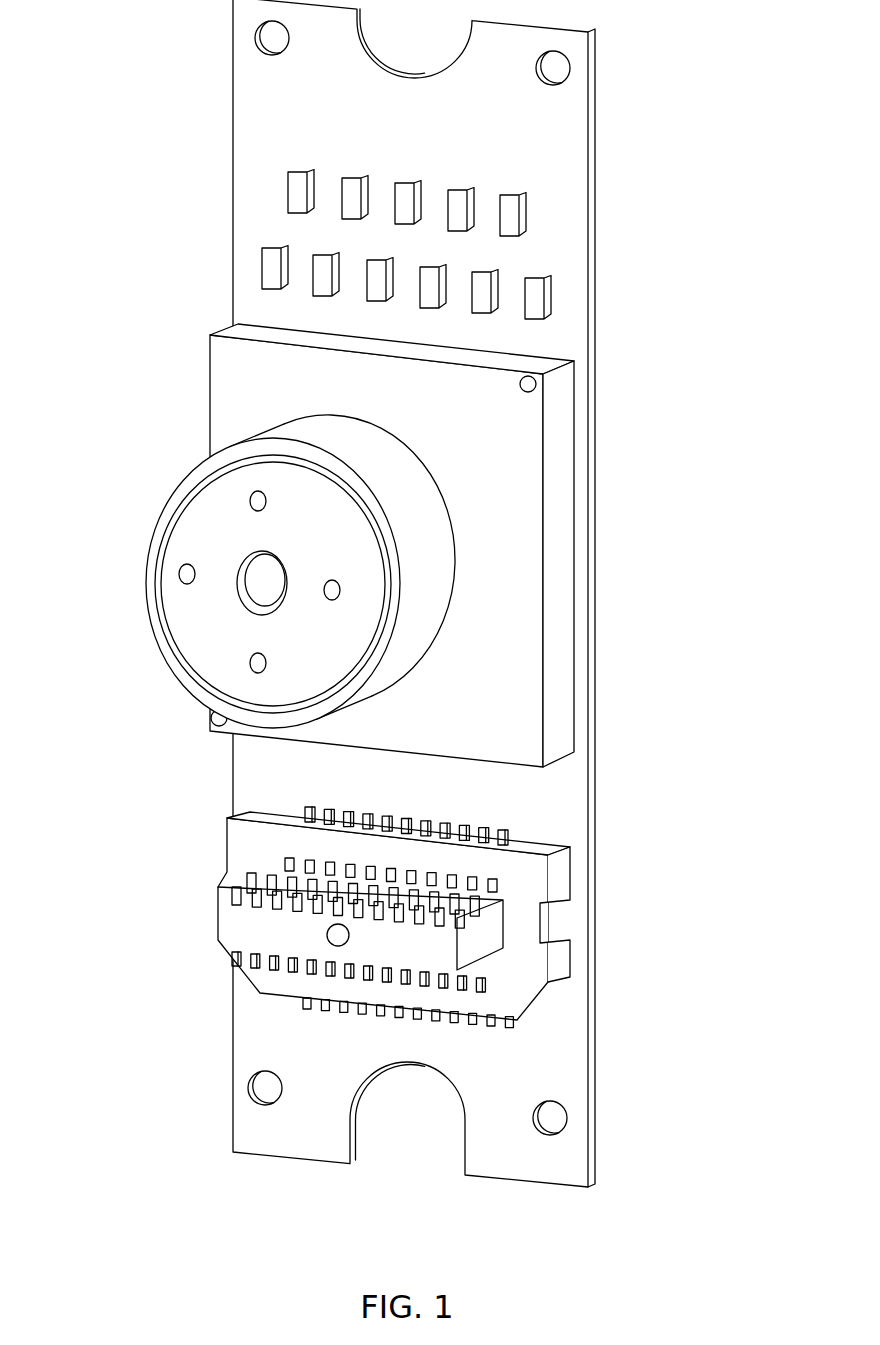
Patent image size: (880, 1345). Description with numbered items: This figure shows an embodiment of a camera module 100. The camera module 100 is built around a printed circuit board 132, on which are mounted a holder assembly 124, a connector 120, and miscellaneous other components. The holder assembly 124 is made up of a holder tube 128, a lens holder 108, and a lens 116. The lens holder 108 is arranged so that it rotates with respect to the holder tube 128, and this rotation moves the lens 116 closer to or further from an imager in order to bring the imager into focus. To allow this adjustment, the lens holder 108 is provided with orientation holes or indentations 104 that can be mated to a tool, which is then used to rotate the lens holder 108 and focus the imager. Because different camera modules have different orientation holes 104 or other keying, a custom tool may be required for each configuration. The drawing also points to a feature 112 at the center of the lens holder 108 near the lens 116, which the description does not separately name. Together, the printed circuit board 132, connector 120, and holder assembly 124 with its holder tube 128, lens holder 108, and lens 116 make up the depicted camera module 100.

The camera module 100 is at (398, 593).
The orientation holes 104 is at (250, 499).
The lens holder 108 is at (208, 652).
The shaft boss 112 is at (217, 604).
The lens 116 is at (262, 577).
The connector 120 is at (205, 925).
The holder assembly 124 is at (575, 480).
The holder tube 128 is at (257, 584).
The printed circuit board 132 is at (383, 152).